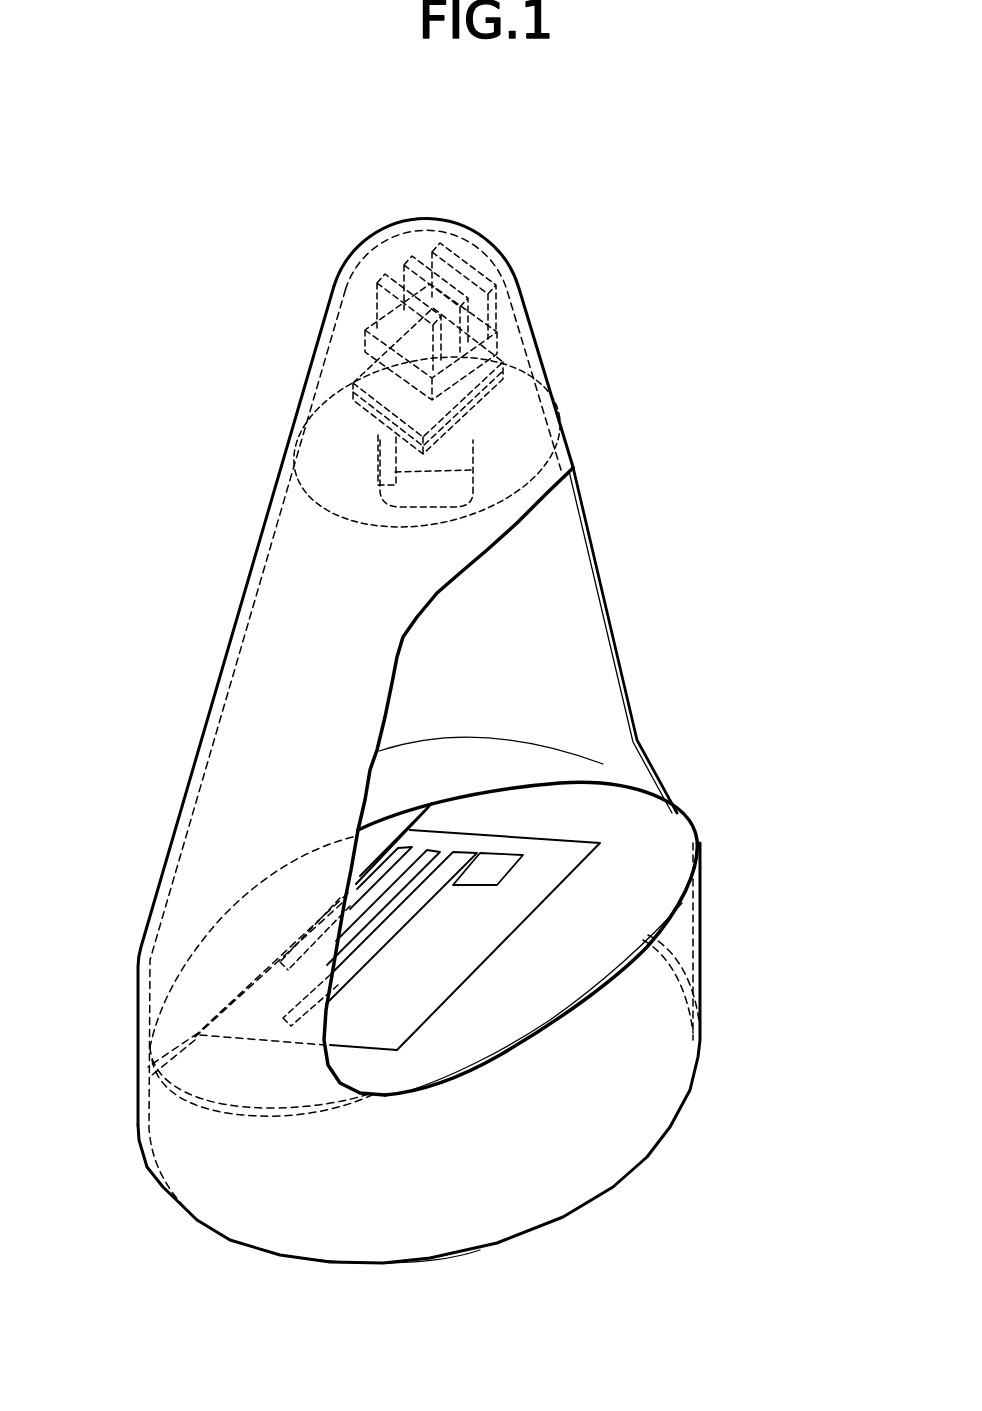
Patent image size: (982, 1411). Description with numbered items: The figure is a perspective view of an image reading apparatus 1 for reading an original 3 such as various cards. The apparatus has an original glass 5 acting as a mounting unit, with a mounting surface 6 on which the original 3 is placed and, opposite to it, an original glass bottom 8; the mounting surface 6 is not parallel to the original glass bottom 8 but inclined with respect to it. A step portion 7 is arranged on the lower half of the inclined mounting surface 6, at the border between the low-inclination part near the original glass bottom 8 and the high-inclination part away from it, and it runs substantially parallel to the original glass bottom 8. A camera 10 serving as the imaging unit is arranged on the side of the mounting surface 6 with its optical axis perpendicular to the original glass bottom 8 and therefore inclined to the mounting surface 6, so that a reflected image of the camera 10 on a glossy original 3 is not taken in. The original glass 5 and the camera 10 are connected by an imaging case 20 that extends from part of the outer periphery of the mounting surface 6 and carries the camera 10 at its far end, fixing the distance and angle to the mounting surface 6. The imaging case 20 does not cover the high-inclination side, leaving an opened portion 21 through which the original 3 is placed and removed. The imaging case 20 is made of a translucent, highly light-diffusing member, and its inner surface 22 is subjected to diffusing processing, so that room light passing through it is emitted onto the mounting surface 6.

The image reading apparatus 1 is at (253, 184).
The original 3 is at (553, 872).
The original glass 5 is at (620, 1119).
The mounting surface 6 is at (650, 887).
The step portion 7 is at (427, 822).
The original glass bottom 8 is at (384, 1276).
The camera 10 is at (557, 385).
The imaging case 20 is at (242, 590).
The opened portion 21 is at (623, 657).
The inner surface 22 is at (527, 577).